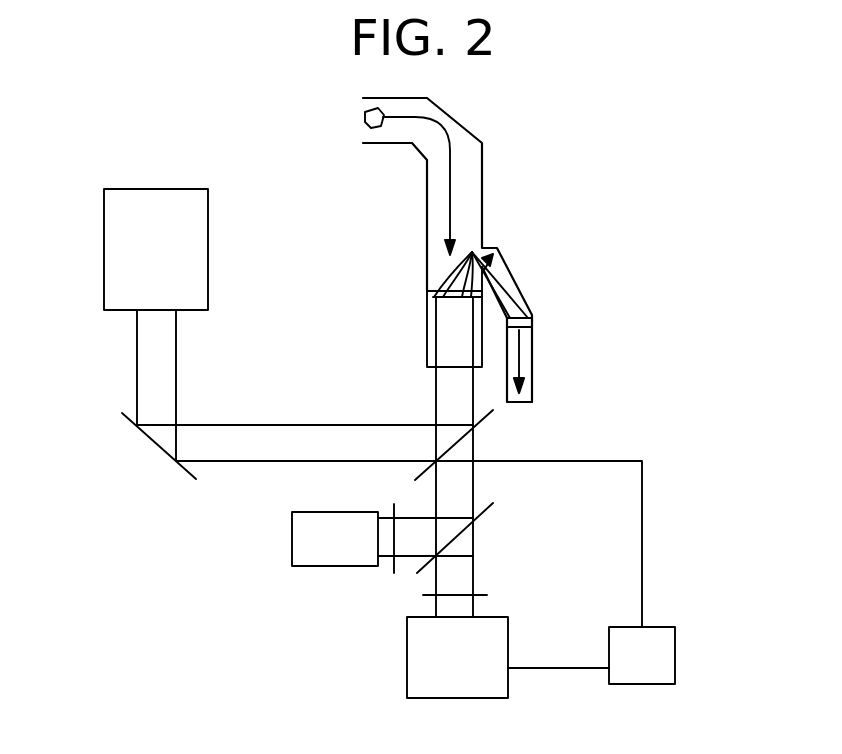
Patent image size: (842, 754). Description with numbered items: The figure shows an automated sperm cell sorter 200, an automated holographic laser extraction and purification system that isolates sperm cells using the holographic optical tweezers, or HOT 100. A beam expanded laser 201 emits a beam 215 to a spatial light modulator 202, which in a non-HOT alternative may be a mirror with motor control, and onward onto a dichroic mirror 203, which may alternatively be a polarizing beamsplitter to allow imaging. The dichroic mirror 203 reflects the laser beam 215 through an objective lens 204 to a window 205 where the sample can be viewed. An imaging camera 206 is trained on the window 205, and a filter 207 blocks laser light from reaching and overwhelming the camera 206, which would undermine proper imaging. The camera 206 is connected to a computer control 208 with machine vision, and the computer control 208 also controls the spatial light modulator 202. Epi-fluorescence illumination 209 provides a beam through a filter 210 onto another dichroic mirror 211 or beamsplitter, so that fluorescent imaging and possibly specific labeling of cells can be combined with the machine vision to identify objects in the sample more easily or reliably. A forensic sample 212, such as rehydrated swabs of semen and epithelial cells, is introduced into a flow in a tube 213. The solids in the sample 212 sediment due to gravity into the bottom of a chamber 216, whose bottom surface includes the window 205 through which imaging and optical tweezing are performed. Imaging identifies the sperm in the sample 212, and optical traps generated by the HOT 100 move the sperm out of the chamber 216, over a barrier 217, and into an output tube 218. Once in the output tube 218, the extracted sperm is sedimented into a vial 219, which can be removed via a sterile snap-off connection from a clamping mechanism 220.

The HOT 100 is at (149, 514).
The automated sperm cell sorter 200 is at (527, 156).
The beam expanded laser 201 is at (104, 247).
The spatial light modulator 202 is at (152, 440).
The dichroic mirror 203 is at (478, 423).
The objective lens 204 is at (428, 350).
The window 205 is at (428, 294).
The imaging camera 206 is at (407, 665).
The filter 207 is at (480, 597).
The computer control 208 is at (675, 655).
The epi-fluorescence illumination 209 is at (292, 540).
The filter 210 is at (394, 506).
The dichroic mirror 211 is at (458, 545).
The forensic sample 212 is at (370, 115).
The tube 213 is at (483, 216).
The beam 215 is at (137, 371).
The chamber 216 is at (426, 200).
The barrier 217 is at (490, 282).
The output tube 218 is at (523, 287).
The vial 219 is at (533, 358).
The clamping mechanism 220 is at (533, 322).